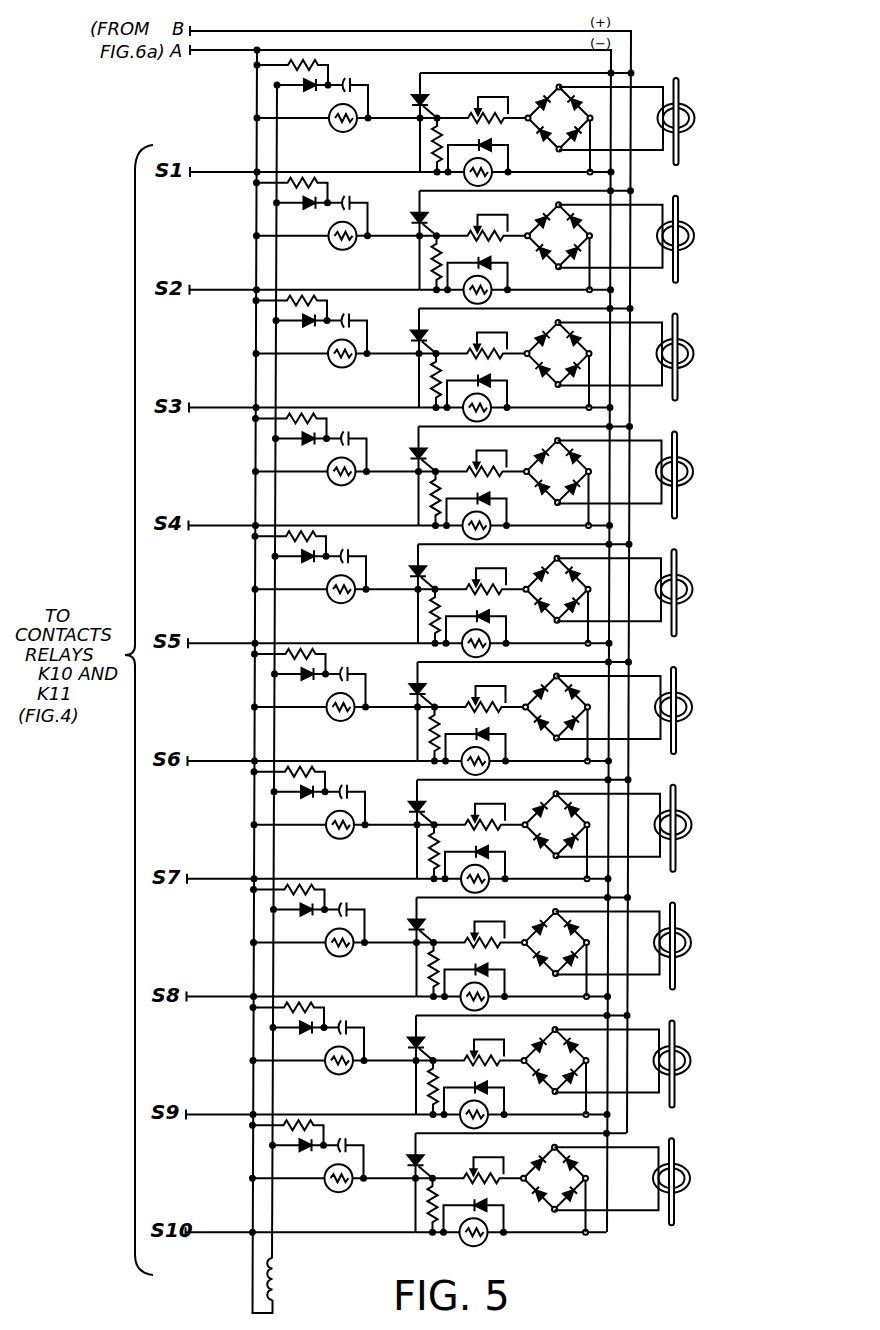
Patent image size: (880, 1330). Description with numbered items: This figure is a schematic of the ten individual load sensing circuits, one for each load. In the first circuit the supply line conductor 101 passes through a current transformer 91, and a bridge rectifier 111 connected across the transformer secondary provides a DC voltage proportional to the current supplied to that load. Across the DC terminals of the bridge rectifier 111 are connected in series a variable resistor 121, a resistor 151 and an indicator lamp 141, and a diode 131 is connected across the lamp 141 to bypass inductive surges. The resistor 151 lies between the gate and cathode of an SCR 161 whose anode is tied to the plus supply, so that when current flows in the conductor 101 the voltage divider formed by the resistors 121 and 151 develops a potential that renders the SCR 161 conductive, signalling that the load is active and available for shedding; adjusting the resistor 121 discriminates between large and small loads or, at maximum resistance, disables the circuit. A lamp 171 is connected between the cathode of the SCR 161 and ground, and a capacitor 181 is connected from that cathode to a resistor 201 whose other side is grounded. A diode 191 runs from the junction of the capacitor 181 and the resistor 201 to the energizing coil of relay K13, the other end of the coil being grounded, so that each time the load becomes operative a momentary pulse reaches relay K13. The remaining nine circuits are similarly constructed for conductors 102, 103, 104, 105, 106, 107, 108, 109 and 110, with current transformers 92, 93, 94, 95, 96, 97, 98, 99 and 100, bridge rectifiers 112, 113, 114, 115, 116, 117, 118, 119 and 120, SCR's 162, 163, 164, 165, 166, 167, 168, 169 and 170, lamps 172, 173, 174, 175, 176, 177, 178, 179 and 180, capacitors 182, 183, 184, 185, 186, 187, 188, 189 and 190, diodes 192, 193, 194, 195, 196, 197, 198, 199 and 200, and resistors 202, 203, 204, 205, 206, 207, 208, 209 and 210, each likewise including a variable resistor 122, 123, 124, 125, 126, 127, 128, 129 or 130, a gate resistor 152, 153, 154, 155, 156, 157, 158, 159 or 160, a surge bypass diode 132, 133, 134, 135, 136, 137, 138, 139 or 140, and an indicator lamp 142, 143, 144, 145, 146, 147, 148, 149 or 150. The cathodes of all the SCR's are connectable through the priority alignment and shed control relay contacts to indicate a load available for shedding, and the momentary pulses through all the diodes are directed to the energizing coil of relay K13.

The resistor 201 is at (300, 43).
The resistor 202 is at (291, 175).
The resistor 203 is at (291, 293).
The resistor 204 is at (290, 410).
The resistor 205 is at (290, 528).
The resistor 206 is at (289, 646).
The resistor 207 is at (289, 764).
The resistor 208 is at (288, 882).
The resistor 209 is at (288, 999).
The resistor 210 is at (287, 1117).
The capacitor 181 is at (353, 90).
The capacitor 182 is at (353, 208).
The capacitor 183 is at (352, 326).
The capacitor 184 is at (352, 443).
The capacitor 185 is at (351, 561).
The capacitor 186 is at (351, 679).
The capacitor 187 is at (351, 797).
The capacitor 188 is at (350, 915).
The capacitor 189 is at (349, 1032).
The capacitor 190 is at (349, 1150).
The diode 191 is at (303, 96).
The diode 192 is at (302, 214).
The diode 193 is at (302, 332).
The diode 194 is at (301, 449).
The diode 195 is at (301, 567).
The diode 196 is at (300, 685).
The diode 197 is at (300, 803).
The diode 198 is at (299, 921).
The diode 199 is at (299, 1038).
The diode 200 is at (298, 1156).
The lamp 171 is at (338, 130).
The lamp 172 is at (337, 248).
The lamp 173 is at (337, 366).
The lamp 174 is at (336, 483).
The lamp 175 is at (336, 601).
The lamp 176 is at (335, 719).
The lamp 177 is at (335, 837).
The lamp 178 is at (334, 955).
The lamp 179 is at (334, 1072).
The lamp 180 is at (333, 1190).
The SCR 161 is at (404, 122).
The SCR 162 is at (404, 240).
The SCR 163 is at (403, 358).
The SCR 164 is at (403, 475).
The SCR 165 is at (402, 593).
The SCR 166 is at (402, 711).
The SCR 167 is at (401, 829).
The SCR 168 is at (401, 947).
The SCR 169 is at (400, 1064).
The SCR 170 is at (400, 1182).
The variable resistor 121 is at (474, 102).
The variable resistor 122 is at (474, 220).
The variable resistor 123 is at (473, 338).
The variable resistor 124 is at (473, 455).
The variable resistor 125 is at (472, 573).
The variable resistor 126 is at (472, 691).
The variable resistor 127 is at (471, 809).
The variable resistor 128 is at (471, 927).
The variable resistor 129 is at (470, 1044).
The variable resistor 130 is at (470, 1162).
The resistor 151 is at (454, 145).
The gate resistor 152 is at (454, 262).
The gate resistor 153 is at (453, 380).
The gate resistor 154 is at (453, 498).
The gate resistor 155 is at (452, 616).
The gate resistor 156 is at (452, 734).
The gate resistor 157 is at (452, 851).
The gate resistor 158 is at (451, 969).
The gate resistor 159 is at (450, 1087).
The gate resistor 160 is at (450, 1205).
The diode 131 is at (497, 155).
The diode 132 is at (497, 273).
The diode 133 is at (496, 391).
The diode 134 is at (496, 508).
The diode 135 is at (495, 626).
The diode 136 is at (495, 744).
The diode 137 is at (494, 862).
The diode 138 is at (494, 980).
The diode 139 is at (493, 1097).
The diode 140 is at (493, 1215).
The indicator lamp 141 is at (505, 175).
The lamp 142 is at (505, 293).
The lamp 143 is at (504, 411).
The lamp 144 is at (504, 528).
The lamp 145 is at (503, 646).
The lamp 146 is at (503, 764).
The lamp 147 is at (502, 882).
The lamp 148 is at (502, 1000).
The lamp 149 is at (501, 1117).
The lamp 150 is at (501, 1235).
The bridge rectifier 111 is at (559, 129).
The bridge rectifier 112 is at (558, 245).
The bridge rectifier 113 is at (558, 364).
The bridge rectifier 114 is at (557, 482).
The bridge rectifier 115 is at (557, 600).
The bridge rectifier 116 is at (556, 718).
The bridge rectifier 117 is at (556, 835).
The bridge rectifier 118 is at (555, 953).
The bridge rectifier 119 is at (555, 1071).
The bridge rectifier 120 is at (554, 1189).
The supply line conductor 101 is at (645, 120).
The supply line conductor 102 is at (645, 238).
The supply line conductor 103 is at (644, 356).
The supply line conductor 104 is at (644, 473).
The supply line conductor 105 is at (643, 591).
The supply line conductor 106 is at (643, 709).
The supply line conductor 107 is at (642, 827).
The supply line conductor 108 is at (642, 945).
The supply line conductor 109 is at (641, 1062).
The supply line conductor 110 is at (641, 1180).
The current transformer 91 is at (696, 118).
The current transformer 92 is at (695, 235).
The current transformer 93 is at (695, 353).
The current transformer 94 is at (694, 471).
The current transformer 95 is at (694, 589).
The current transformer 96 is at (693, 707).
The current transformer 97 is at (694, 824).
The current transformer 98 is at (692, 942).
The current transformer 99 is at (692, 1060).
The current transformer 100 is at (697, 1178).
The relay K13 is at (297, 1279).